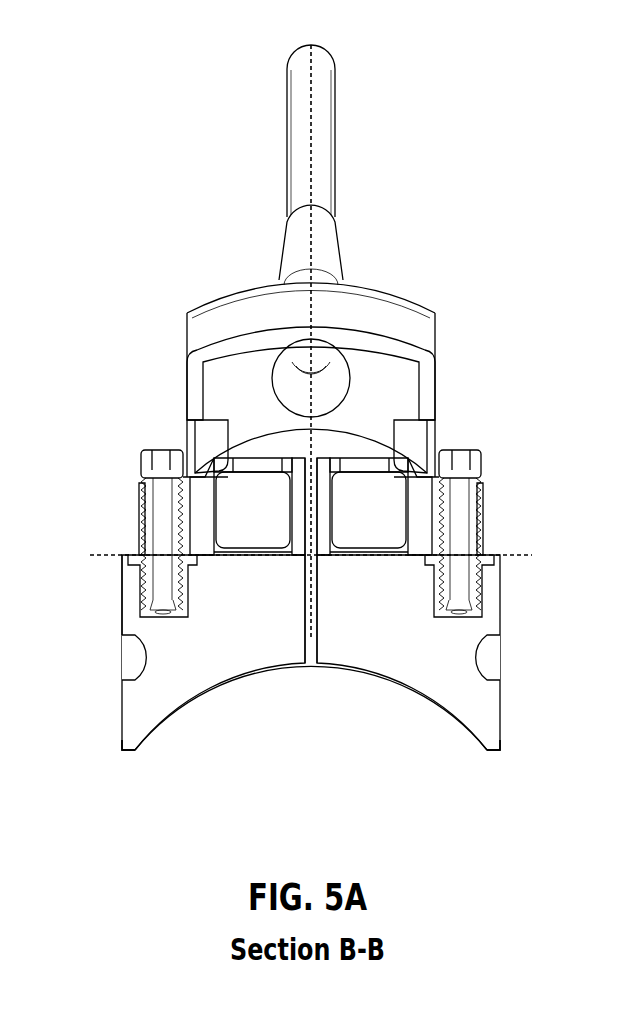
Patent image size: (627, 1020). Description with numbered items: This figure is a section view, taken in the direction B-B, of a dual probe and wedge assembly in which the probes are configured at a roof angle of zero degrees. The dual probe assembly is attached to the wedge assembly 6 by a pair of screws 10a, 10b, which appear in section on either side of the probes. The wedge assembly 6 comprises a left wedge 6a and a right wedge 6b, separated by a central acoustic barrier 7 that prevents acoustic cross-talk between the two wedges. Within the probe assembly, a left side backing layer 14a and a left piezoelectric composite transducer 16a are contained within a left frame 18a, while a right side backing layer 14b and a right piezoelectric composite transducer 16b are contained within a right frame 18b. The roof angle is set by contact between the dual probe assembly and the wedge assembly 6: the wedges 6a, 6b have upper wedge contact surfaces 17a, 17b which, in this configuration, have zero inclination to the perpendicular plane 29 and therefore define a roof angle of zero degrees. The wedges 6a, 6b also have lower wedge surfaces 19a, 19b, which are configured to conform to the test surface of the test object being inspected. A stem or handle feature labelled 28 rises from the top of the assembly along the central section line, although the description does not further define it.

The stem 28 is at (313, 156).
The screw 10a is at (167, 476).
The screw 10b is at (462, 478).
The left side backing layer 14a is at (262, 496).
The right side backing layer 14b is at (352, 496).
The left piezoelectric composite transducer 16a is at (269, 553).
The right piezoelectric composite transducer 16b is at (341, 553).
The upper wedge contact surface 17a is at (137, 556).
The upper wedge contact surface 17b is at (485, 556).
The left frame 18a is at (203, 538).
The right frame 18b is at (420, 540).
The perpendicular plane 29 is at (98, 560).
The acoustic barrier 7 is at (315, 655).
The wedge assembly 6 is at (306, 746).
The left wedge 6a is at (212, 668).
The right wedge 6b is at (386, 658).
The lower wedge surface 19a is at (160, 728).
The lower wedge surface 19b is at (470, 732).